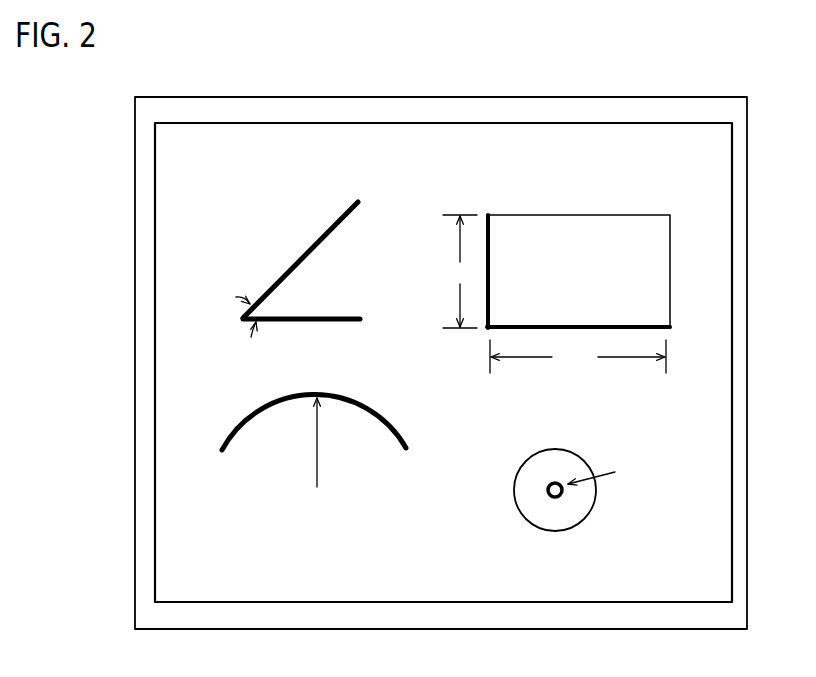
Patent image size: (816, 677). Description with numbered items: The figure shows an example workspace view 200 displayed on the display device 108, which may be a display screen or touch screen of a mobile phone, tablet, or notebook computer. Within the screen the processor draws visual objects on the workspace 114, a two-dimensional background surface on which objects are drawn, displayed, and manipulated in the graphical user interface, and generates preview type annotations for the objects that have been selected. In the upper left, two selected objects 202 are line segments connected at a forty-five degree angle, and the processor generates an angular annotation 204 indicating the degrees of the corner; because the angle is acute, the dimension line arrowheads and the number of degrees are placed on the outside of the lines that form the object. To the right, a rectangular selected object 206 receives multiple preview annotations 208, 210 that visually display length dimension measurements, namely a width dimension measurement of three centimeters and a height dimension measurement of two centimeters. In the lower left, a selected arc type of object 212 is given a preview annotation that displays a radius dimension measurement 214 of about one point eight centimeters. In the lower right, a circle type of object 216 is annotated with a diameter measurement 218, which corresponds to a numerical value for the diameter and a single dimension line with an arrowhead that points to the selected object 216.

The display device 108 is at (135, 108).
The workspace 114 is at (268, 143).
The workspace view 200 is at (616, 57).
The selected objects 202 is at (287, 237).
The angular annotation 204 is at (229, 258).
The selected objects 206 is at (550, 290).
The preview annotation 208 is at (590, 372).
The preview annotation 210 is at (430, 222).
The arc type of object 212 is at (248, 417).
The radius dimension measurement 214 is at (352, 515).
The circle type of object 216 is at (557, 498).
The diameter measurement 218 is at (628, 488).